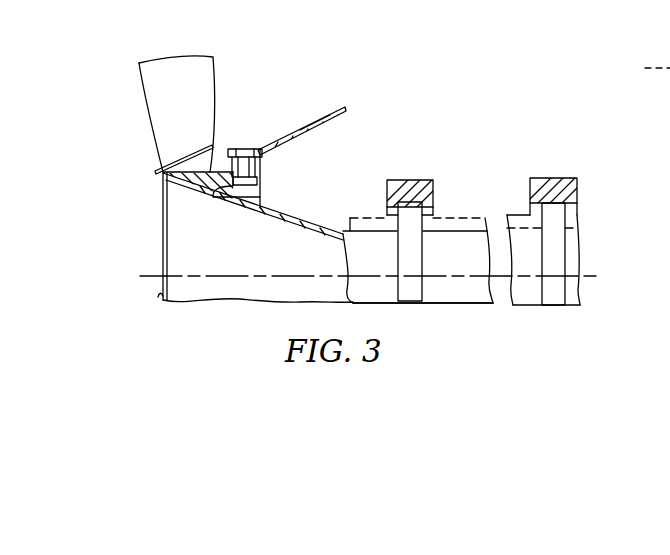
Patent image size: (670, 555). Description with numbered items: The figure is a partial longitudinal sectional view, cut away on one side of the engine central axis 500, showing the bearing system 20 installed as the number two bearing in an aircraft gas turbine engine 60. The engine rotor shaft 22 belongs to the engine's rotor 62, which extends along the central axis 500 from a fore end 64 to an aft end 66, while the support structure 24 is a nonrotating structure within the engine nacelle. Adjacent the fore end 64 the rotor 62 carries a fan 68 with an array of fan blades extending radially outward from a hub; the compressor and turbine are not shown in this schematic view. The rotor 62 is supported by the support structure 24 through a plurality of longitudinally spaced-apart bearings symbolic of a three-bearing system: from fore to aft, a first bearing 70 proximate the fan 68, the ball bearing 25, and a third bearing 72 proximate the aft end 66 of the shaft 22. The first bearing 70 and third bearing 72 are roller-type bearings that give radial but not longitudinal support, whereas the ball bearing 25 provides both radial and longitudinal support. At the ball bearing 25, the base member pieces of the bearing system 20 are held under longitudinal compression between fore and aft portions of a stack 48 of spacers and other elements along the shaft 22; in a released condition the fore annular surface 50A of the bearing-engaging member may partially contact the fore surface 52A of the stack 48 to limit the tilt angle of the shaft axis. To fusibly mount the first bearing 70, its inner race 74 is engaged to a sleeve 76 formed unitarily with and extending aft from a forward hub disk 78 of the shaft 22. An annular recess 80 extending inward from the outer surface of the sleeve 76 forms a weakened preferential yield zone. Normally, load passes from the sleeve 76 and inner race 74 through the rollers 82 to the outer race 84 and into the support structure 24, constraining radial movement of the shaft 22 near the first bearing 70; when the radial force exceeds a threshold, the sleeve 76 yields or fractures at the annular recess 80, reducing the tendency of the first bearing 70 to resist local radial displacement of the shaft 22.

The bearing system 20 is at (452, 206).
The engine rotor shaft 22 is at (280, 228).
The support structure 24 is at (328, 112).
The ball bearing 25 is at (417, 245).
The stack 48 is at (370, 212).
The fore annular surface 50A is at (669, 48).
The fore surface 52A is at (669, 12).
The aircraft gas turbine engine 60 is at (412, 122).
The rotor 62 is at (330, 220).
The fore end 64 is at (155, 243).
The aft end 66 is at (617, 264).
The fan 68 is at (240, 62).
The first bearing 70 is at (266, 170).
The third bearing 72 is at (564, 243).
The inner race 74 is at (256, 181).
The sleeve 76 is at (258, 197).
The forward hub disk 78 is at (187, 196).
The annular recess 80 is at (244, 178).
The rollers 82 is at (273, 152).
The outer race 84 is at (246, 150).
The central axis 500 is at (254, 284).